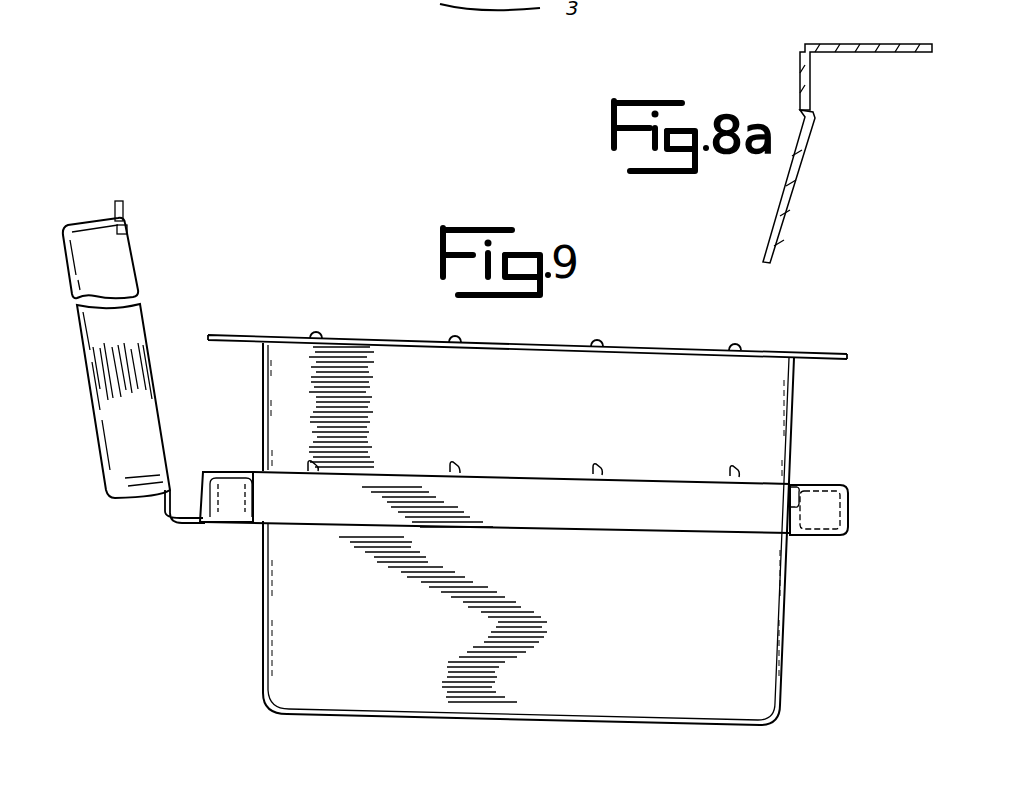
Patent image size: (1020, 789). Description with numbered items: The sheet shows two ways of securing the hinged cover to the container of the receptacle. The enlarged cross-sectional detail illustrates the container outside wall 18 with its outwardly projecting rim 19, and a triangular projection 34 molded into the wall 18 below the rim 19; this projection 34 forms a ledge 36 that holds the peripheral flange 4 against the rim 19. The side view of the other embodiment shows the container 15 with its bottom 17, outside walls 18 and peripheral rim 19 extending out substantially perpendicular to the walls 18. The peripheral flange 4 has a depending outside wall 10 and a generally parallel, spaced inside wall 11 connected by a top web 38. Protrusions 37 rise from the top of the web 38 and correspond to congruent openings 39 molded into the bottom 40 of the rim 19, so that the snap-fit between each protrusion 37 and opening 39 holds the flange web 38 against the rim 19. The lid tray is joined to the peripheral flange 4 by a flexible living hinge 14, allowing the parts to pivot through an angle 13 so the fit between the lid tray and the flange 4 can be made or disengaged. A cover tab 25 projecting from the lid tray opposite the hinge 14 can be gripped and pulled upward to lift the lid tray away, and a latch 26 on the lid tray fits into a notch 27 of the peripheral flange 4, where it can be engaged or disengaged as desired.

In FIG. 9, the peripheral flange 4 is at (330, 510).
In FIG. 9, the outside wall 10 is at (585, 517).
In FIG. 9, the inside wall 11 is at (800, 483).
In FIG. 9, the angle 13 is at (158, 408).
In FIG. 9, the hinge 14 is at (172, 528).
In FIG. 9, the container 15 is at (745, 608).
In FIG. 9, the bottom 17 is at (659, 724).
In FIG. 8A, the outside walls 18 is at (783, 230).
In FIG. 9, the outside walls 18 is at (640, 641).
In FIG. 8A, the rim 19 is at (867, 40).
In FIG. 9, the rim 19 is at (220, 343).
In FIG. 9, the cover tab 25 is at (124, 212).
In FIG. 9, the latch 26 is at (128, 230).
In FIG. 9, the notch 27 is at (852, 520).
In FIG. 8A, the triangular projection 34 is at (808, 133).
In FIG. 8A, the ledge 36 is at (808, 113).
In FIG. 9, the protrusion 37 is at (316, 466).
In FIG. 9, the top web 38 is at (283, 470).
In FIG. 9, the openings 39 is at (318, 345).
In FIG. 9, the bottom of rim 40 is at (312, 345).